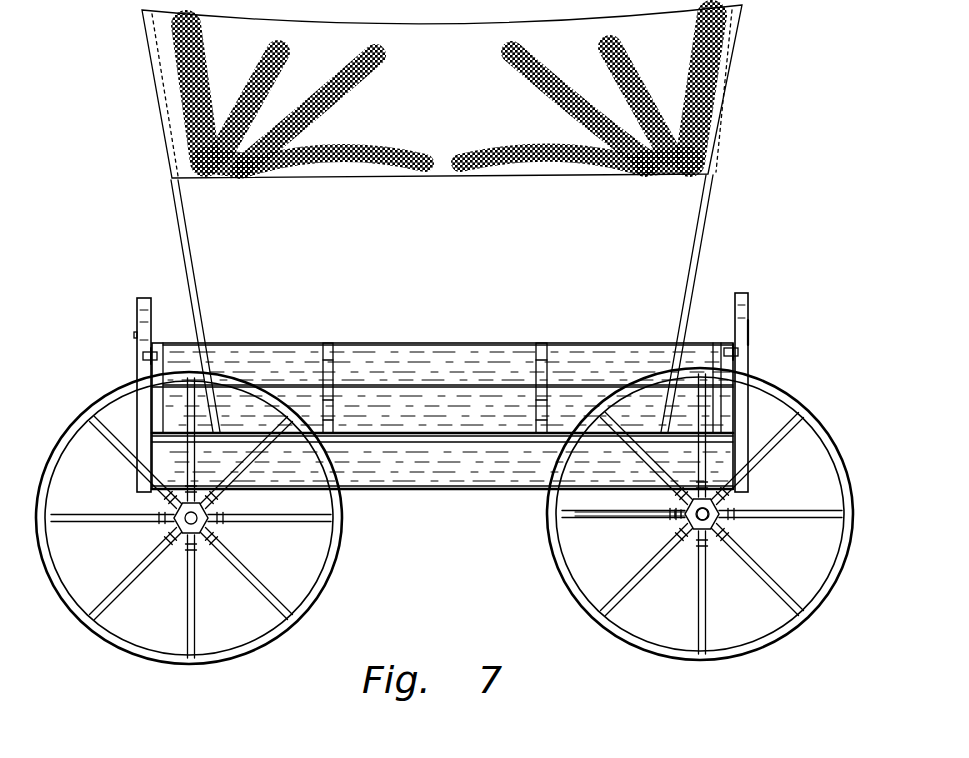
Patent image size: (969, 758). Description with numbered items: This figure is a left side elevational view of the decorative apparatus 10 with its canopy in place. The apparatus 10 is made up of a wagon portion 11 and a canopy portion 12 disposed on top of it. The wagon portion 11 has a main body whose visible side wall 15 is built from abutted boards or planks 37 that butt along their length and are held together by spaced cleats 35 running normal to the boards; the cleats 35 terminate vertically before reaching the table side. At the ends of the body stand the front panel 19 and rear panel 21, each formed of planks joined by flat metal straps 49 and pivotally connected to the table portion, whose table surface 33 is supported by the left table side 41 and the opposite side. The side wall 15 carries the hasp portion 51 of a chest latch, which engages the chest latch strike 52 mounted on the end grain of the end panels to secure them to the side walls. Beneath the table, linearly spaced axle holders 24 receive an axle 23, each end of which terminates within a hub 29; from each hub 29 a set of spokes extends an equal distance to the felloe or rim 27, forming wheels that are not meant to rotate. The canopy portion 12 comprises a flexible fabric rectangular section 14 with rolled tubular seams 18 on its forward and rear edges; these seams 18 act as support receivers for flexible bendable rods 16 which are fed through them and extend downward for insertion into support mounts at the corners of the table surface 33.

The decorative apparatus 10 is at (765, 203).
The wagon portion 11 is at (455, 318).
The canopy portion 12 is at (488, 113).
The flexible fabric rectangular section 14 is at (320, 152).
The left side wall 15 is at (278, 342).
The flexible bendable rod 16 is at (700, 248).
The rolled tubular seam 18 is at (165, 112).
The front panel 19 is at (748, 304).
The rear panel 21 is at (137, 318).
The axle 23 is at (642, 516).
The axle holder 24 is at (688, 508).
The felloe or rim 27 is at (570, 578).
The hub 29 is at (710, 515).
The table surface 33 is at (518, 420).
The cleat 35 is at (328, 343).
The abutted boards or planks 37 is at (383, 381).
The left table side 41 is at (416, 481).
The strap 49 is at (748, 330).
The hasp portion 51 is at (143, 356).
The chest latch strike 52 is at (742, 356).